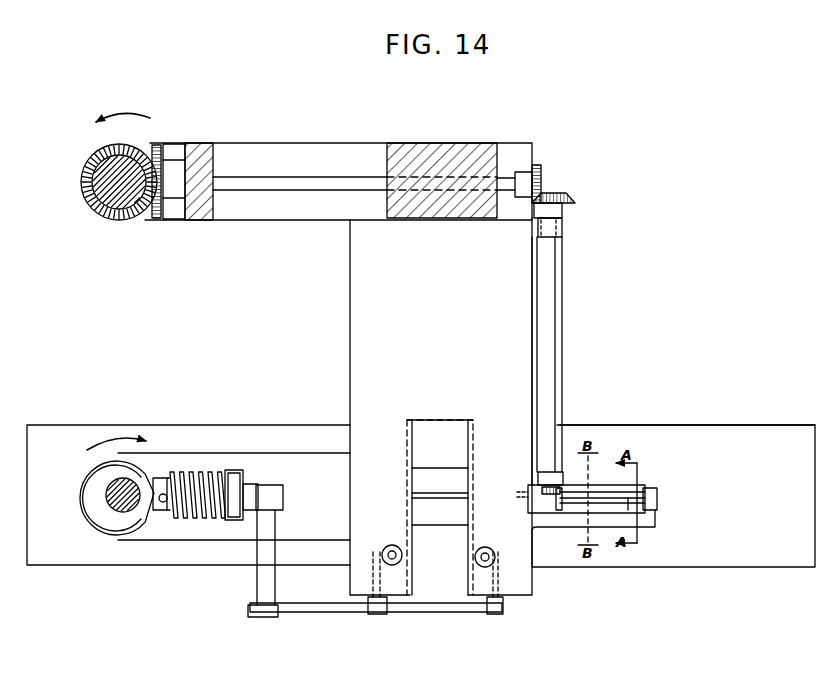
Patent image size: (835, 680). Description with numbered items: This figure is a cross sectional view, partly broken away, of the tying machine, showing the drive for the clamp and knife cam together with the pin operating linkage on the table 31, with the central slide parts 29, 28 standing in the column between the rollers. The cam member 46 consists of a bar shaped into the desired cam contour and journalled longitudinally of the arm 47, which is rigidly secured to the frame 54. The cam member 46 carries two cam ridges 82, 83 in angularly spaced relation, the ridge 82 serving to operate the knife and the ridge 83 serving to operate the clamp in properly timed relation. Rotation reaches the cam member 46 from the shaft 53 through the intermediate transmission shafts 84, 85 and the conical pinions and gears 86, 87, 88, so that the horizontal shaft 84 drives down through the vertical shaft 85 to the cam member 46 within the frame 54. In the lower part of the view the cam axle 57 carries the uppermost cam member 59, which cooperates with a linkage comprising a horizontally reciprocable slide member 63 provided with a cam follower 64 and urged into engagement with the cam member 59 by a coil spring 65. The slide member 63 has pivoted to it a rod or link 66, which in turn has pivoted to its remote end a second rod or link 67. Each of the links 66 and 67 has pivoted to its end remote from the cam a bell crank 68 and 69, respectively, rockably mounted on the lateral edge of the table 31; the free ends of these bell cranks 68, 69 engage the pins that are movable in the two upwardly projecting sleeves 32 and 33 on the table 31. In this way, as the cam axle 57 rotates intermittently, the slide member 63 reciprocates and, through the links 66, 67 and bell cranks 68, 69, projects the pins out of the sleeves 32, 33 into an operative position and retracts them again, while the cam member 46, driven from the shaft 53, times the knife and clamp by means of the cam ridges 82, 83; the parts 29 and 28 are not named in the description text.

The shaft 53 is at (152, 143).
The intermediate transmission shaft 84 is at (274, 181).
The conical pinion 86 is at (150, 226).
The conical gear 87 is at (556, 172).
The intermediate transmission shaft 85 is at (560, 276).
The table 31 is at (360, 358).
The frame 54 is at (48, 430).
The cam ridge 83 is at (687, 404).
The cam axle 57 is at (132, 520).
The cam member 59 is at (90, 508).
The cam follower 64 is at (156, 476).
The coil spring 65 is at (190, 474).
The slide member 63 is at (268, 486).
The rod or link 66 is at (301, 619).
The second rod or link 67 is at (440, 614).
The bell crank 68 is at (370, 604).
The bell crank 69 is at (504, 606).
The slide member 29 is at (430, 470).
The slide bar 28 is at (442, 526).
The sleeve 32 is at (392, 545).
The sleeve 33 is at (488, 546).
The conical gear 88 is at (549, 506).
The cam member 46 is at (600, 493).
The arm 47 is at (655, 520).
The cam ridge 82 is at (630, 508).